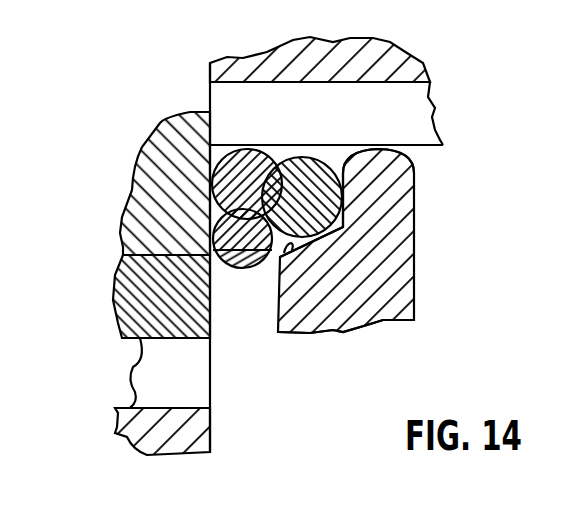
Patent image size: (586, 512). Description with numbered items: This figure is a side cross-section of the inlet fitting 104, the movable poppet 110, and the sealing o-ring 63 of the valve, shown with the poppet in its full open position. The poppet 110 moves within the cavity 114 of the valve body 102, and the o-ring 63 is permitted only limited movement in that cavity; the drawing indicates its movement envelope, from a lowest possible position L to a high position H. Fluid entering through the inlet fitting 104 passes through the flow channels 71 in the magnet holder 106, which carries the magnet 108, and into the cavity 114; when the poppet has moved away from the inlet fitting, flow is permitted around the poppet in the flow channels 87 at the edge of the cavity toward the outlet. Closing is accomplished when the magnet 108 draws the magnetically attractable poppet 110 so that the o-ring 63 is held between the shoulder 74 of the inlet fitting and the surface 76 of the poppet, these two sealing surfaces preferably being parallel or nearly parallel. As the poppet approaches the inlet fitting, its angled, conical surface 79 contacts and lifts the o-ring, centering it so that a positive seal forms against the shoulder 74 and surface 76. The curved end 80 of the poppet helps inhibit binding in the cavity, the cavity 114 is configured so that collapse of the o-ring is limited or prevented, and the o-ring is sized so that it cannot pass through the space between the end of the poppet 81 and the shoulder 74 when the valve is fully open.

The valve body 102 is at (417, 62).
The flow channels 87 is at (407, 125).
The cavity 114 is at (300, 148).
The high position H is at (258, 152).
The inlet fitting 104 is at (127, 203).
The magnet holder 106 is at (113, 295).
The flow channels 71 is at (133, 367).
The magnet 108 is at (120, 428).
The sealing o-ring 63 is at (213, 148).
The shoulder 74 is at (214, 247).
The lowest position L is at (226, 280).
The movable poppet 110 is at (405, 247).
The curved end 80 is at (405, 152).
The surface 76 is at (342, 207).
The angled surface 79 is at (298, 247).
The end of the poppet 81 is at (277, 331).